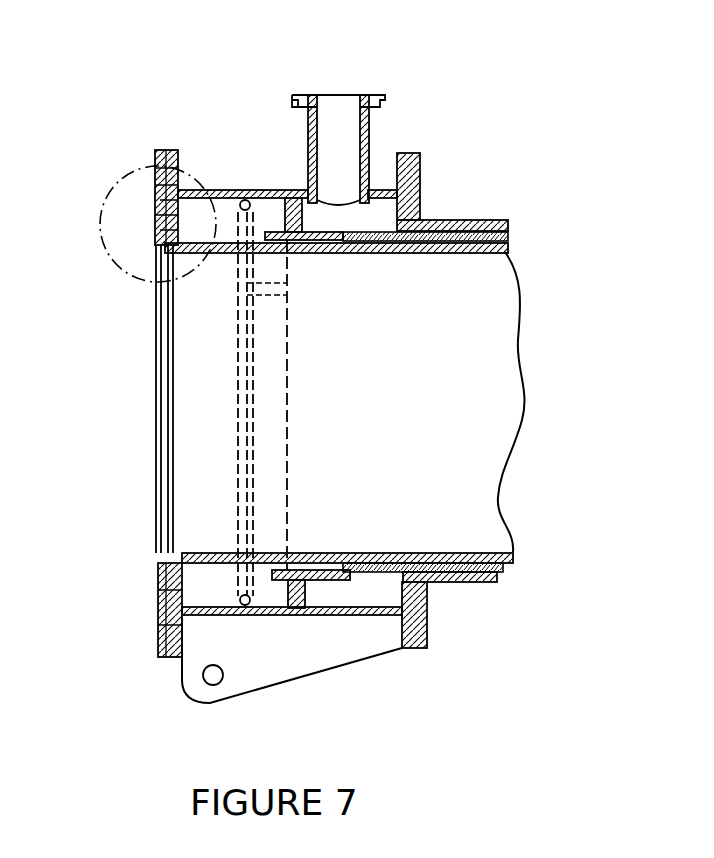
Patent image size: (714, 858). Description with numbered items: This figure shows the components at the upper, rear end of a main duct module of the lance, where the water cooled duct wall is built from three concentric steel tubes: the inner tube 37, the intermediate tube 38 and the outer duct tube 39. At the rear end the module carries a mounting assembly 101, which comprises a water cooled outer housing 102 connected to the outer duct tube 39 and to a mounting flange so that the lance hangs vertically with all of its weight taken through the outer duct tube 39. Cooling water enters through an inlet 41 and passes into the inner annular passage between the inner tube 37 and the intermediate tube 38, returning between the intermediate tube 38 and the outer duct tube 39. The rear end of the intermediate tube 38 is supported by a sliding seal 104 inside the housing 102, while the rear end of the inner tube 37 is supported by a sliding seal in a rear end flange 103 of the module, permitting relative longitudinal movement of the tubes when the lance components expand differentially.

The mounting assembly 101 is at (228, 95).
The water cooled outer housing 102 is at (270, 190).
The rear end flange 103 is at (153, 180).
The sliding seal 104 is at (270, 190).
The inlet 41 is at (357, 100).
The outer duct tube 39 is at (482, 220).
The intermediate tube 38 is at (503, 235).
The inner tube 37 is at (502, 245).